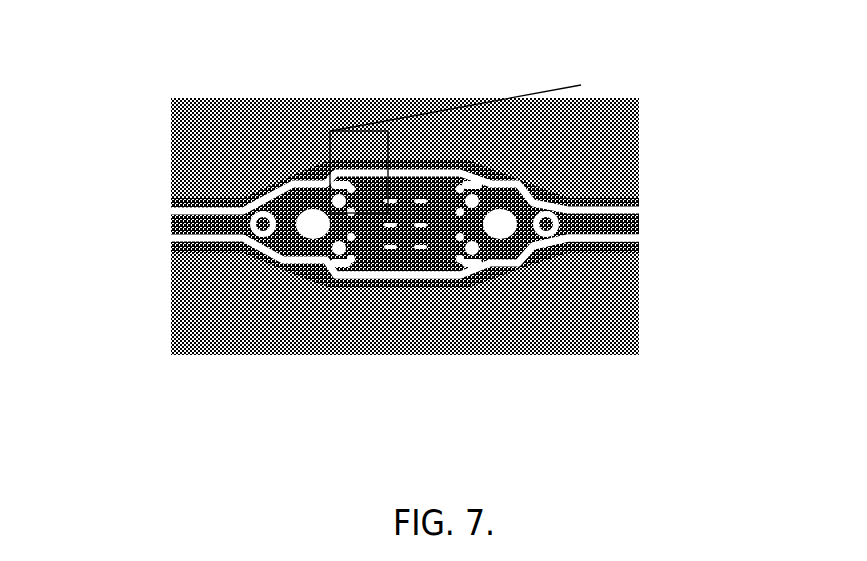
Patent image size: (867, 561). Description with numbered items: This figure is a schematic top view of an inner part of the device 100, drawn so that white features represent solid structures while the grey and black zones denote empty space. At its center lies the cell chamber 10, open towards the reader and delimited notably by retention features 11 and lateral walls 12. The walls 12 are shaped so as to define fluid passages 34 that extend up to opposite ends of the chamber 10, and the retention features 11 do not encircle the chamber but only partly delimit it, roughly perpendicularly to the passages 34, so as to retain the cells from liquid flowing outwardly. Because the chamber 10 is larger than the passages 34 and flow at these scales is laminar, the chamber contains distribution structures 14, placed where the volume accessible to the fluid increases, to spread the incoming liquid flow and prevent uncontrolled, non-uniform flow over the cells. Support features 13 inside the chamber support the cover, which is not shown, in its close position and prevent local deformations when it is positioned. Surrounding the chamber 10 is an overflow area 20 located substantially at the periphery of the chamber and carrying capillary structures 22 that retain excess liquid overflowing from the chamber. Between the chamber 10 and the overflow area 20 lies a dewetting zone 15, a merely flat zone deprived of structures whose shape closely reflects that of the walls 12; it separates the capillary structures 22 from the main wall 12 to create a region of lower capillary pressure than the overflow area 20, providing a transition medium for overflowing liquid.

The sensor device 100 is at (410, 248).
The chamber 10 is at (410, 248).
The retention features 11 is at (575, 244).
The lateral walls 12 is at (427, 263).
The support features 13 is at (417, 190).
The distribution structures 14 is at (243, 218).
The dewetting zone 15 is at (562, 195).
The overflow area 20 is at (597, 108).
The capillary structures 22 is at (245, 141).
The fluid passages 34 is at (245, 214).